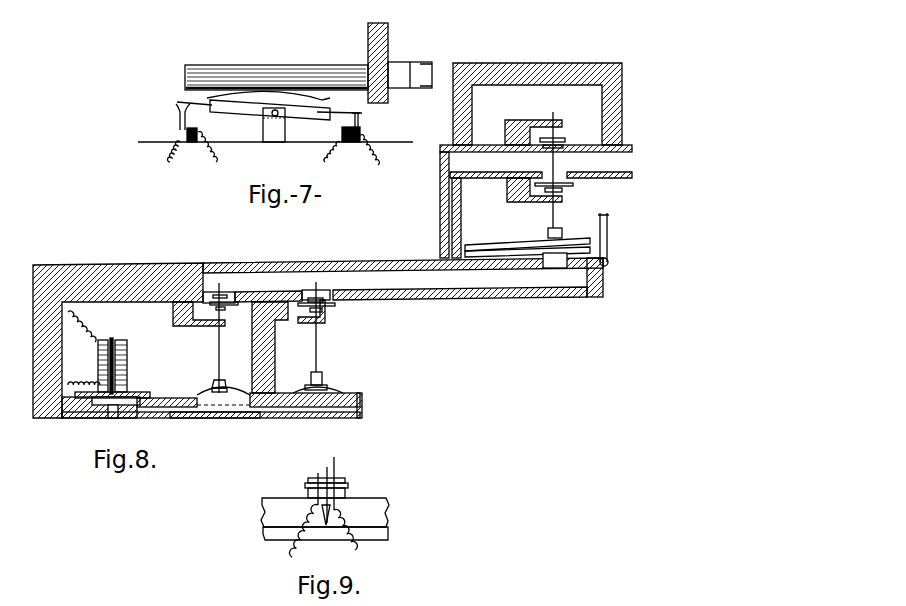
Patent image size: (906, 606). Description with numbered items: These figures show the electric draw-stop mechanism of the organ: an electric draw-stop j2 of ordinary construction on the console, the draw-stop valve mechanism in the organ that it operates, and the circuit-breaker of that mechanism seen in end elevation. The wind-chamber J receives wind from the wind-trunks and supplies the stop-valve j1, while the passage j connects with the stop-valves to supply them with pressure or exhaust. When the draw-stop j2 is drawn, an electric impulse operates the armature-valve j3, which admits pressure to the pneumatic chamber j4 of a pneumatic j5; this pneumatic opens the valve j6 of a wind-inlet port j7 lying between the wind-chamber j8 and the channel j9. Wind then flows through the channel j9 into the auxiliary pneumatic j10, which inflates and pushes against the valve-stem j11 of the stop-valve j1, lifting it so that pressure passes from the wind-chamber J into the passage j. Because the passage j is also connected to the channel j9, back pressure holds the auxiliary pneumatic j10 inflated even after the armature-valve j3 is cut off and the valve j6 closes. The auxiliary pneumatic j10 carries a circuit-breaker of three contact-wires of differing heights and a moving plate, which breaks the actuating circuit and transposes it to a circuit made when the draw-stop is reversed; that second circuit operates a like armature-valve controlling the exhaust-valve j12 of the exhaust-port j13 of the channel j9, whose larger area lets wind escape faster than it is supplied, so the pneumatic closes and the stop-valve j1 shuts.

In FIG. 8, the wind-chamber J is at (547, 95).
In FIG. 8, the passage j is at (615, 160).
In FIG. 8, the stop-valve j1 is at (570, 186).
In FIG. 7, the electric draw-stop j2 is at (296, 64).
In FIG. 8, the armature-valve j3 is at (125, 391).
In FIG. 8, the pneumatic chamber j4 is at (212, 408).
In FIG. 8, the pneumatic j5 is at (217, 393).
In FIG. 8, the valve j6 is at (202, 302).
In FIG. 8, the wind-inlet port j7 is at (230, 292).
In FIG. 8, the wind-chamber j8 is at (227, 338).
In FIG. 8, the channel j9 is at (367, 278).
In FIG. 8, the auxiliary pneumatic j10 is at (540, 252).
In FIG. 8, the valve-stem j11 is at (562, 222).
In FIG. 8, the exhaust-valve j12 is at (327, 305).
In FIG. 8, the exhaust-port j13 is at (327, 290).